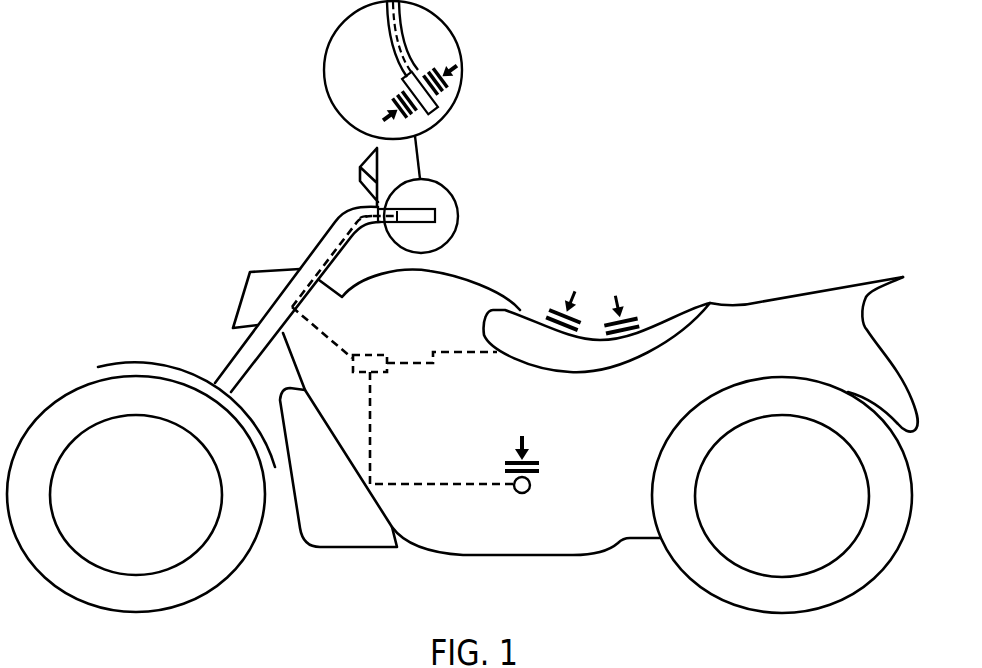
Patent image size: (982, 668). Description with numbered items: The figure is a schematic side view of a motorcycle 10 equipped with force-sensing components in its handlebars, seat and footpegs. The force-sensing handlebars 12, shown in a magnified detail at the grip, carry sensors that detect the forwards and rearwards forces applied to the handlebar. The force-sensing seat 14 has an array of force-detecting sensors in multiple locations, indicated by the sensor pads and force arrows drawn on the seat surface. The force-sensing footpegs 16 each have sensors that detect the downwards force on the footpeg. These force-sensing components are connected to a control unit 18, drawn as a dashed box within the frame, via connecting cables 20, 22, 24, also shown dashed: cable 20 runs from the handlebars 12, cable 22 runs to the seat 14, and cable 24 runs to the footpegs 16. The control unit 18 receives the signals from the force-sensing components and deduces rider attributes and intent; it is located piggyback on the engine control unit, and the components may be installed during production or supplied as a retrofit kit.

The motorcycle 10 is at (86, 56).
The force-sensing handlebars 12 is at (428, 110).
The force-sensing seat 14 is at (658, 322).
The force-sensing footpegs 16 is at (532, 483).
The control unit 18 is at (385, 353).
The connecting cable 20 is at (330, 342).
The connecting cable 22 is at (433, 363).
The connecting cable 24 is at (370, 433).